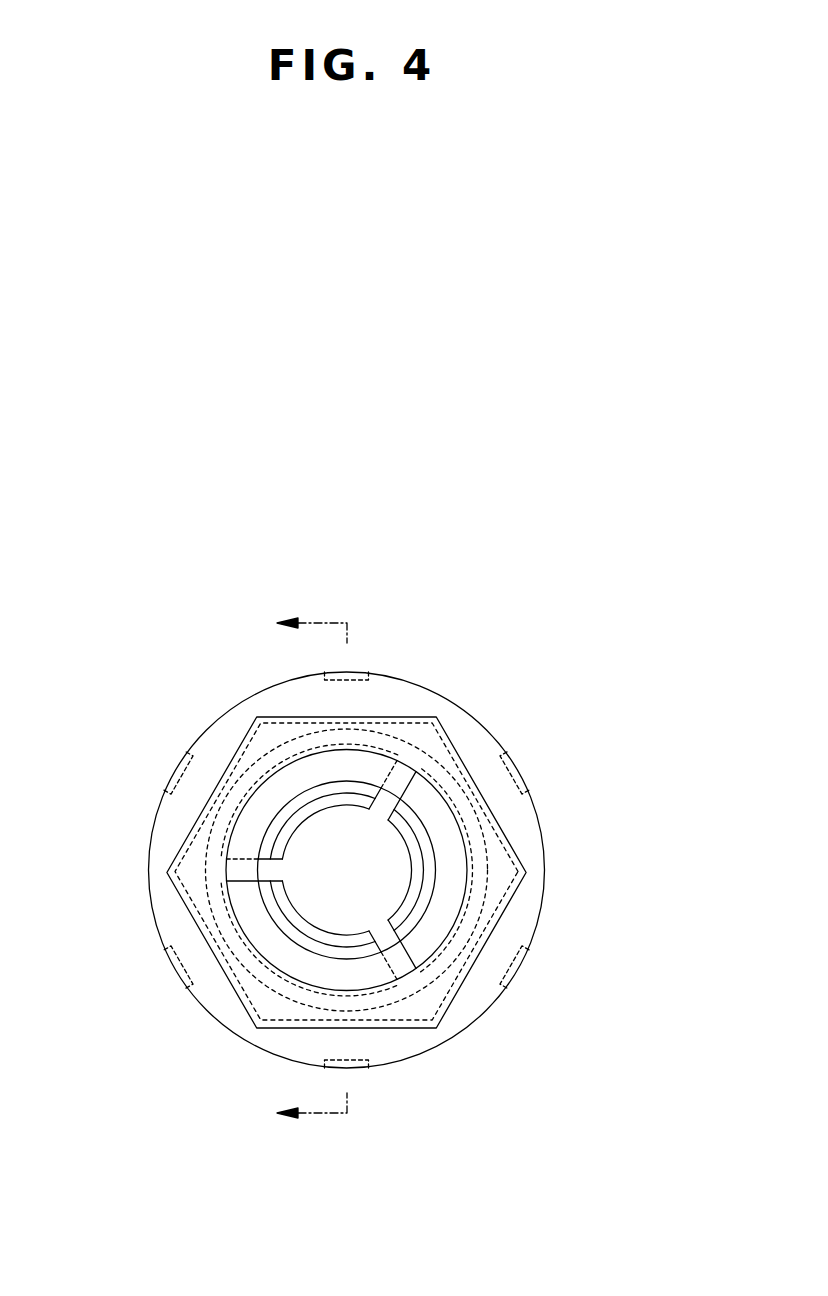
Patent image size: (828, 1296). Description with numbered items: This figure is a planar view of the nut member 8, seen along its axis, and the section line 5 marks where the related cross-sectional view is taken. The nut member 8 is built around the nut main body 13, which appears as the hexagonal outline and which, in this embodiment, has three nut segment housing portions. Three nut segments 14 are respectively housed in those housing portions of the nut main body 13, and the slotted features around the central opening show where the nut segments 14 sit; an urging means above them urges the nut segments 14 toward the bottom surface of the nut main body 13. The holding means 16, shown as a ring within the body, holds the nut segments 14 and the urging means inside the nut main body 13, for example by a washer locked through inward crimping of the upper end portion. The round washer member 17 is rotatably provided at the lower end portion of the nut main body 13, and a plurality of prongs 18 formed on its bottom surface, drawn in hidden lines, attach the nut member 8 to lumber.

The nut member 8 is at (373, 526).
The nut main body 13 is at (507, 873).
The nut segments 14 is at (302, 805).
The holding means 16 is at (437, 773).
The washer member 17 is at (471, 1000).
The prongs 18 is at (177, 768).
The section line of FIG. 5 is at (300, 869).